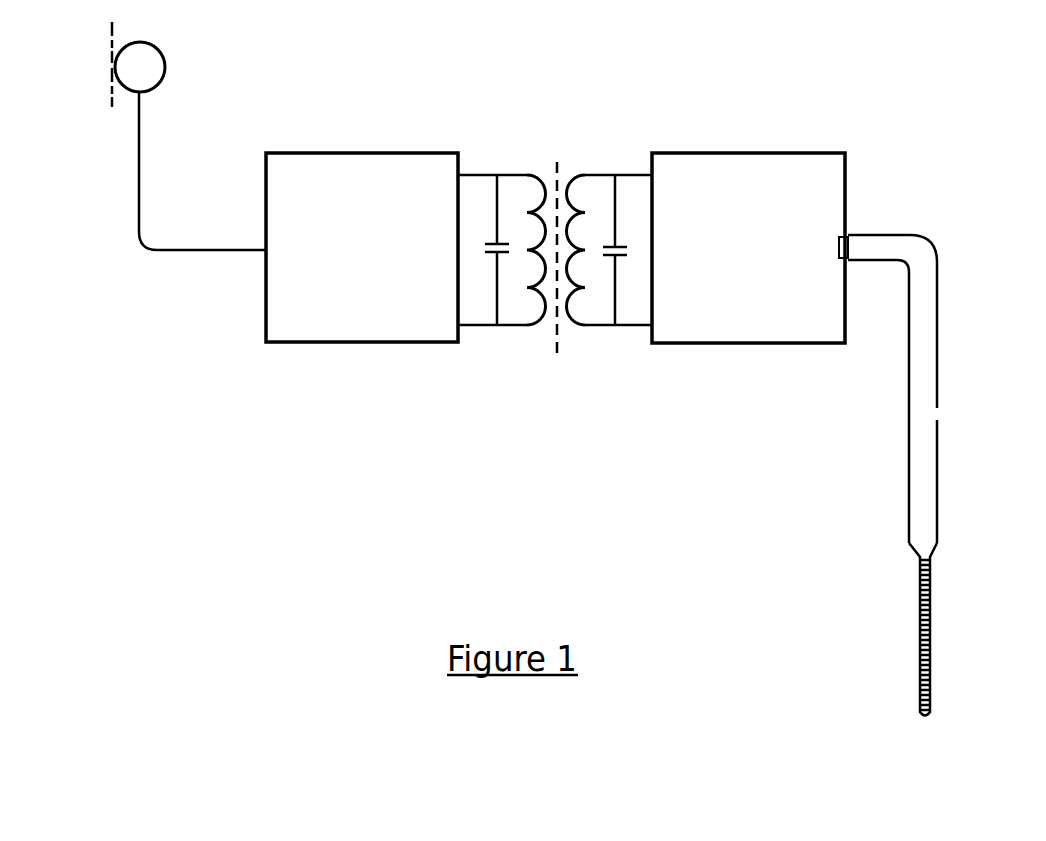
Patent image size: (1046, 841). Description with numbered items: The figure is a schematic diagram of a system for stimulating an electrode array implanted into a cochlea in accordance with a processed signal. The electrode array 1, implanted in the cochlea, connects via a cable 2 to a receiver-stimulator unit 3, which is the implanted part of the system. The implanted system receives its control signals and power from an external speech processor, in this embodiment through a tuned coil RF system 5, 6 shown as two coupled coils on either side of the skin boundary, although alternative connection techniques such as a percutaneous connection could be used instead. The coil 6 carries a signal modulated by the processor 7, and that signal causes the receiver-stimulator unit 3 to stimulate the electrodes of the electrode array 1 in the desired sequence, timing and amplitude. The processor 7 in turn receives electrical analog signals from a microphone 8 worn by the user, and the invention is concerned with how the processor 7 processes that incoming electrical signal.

The electrode array 1 is at (912, 622).
The cable 2 is at (905, 354).
The receiver-stimulator unit 3 is at (752, 345).
The tuned coil RF system coil 5 is at (589, 336).
The coil 6 is at (523, 332).
The processor 7 is at (265, 320).
The microphone 8 is at (125, 95).